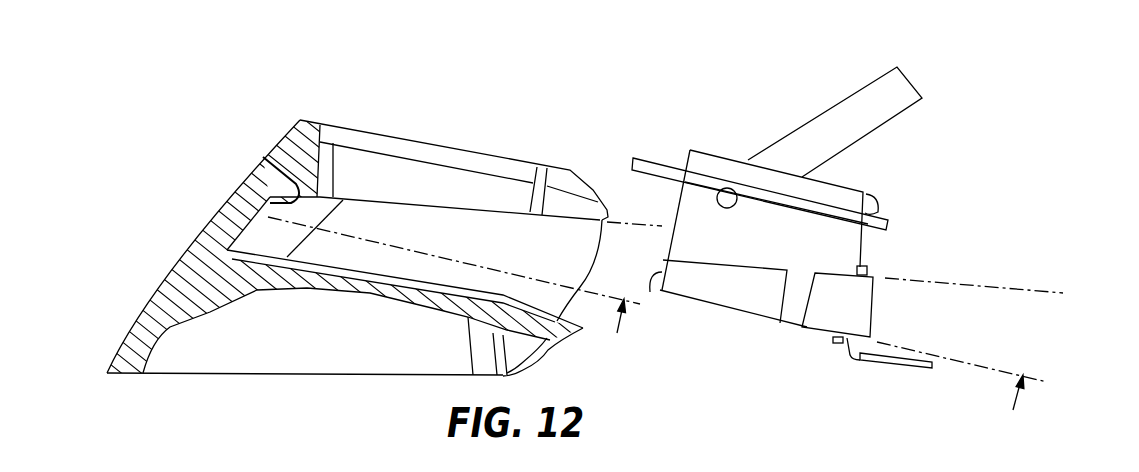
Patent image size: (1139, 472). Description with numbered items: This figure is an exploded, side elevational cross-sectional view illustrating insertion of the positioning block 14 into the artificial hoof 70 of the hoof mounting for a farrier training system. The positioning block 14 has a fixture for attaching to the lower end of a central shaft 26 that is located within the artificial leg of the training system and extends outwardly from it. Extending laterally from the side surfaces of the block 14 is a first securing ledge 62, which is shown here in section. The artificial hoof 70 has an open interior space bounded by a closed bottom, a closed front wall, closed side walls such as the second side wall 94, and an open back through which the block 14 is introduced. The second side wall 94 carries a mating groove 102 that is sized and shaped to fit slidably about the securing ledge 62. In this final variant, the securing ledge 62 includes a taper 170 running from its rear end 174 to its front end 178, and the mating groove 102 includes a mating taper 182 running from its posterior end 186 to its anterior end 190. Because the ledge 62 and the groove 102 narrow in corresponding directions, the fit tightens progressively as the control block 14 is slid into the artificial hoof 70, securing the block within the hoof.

The artificial hoof 70 is at (196, 211).
The anterior end 190 is at (263, 157).
The mating groove 102 is at (368, 213).
The second side wall 94 is at (427, 240).
The mating taper 182 is at (642, 217).
The posterior end 186 is at (620, 248).
The central shaft 26 is at (885, 108).
The positioning block 14 is at (897, 251).
The first securing ledge 62 is at (764, 297).
The front end 178 is at (650, 292).
The rear end 174 is at (873, 297).
The taper 170 is at (1040, 287).